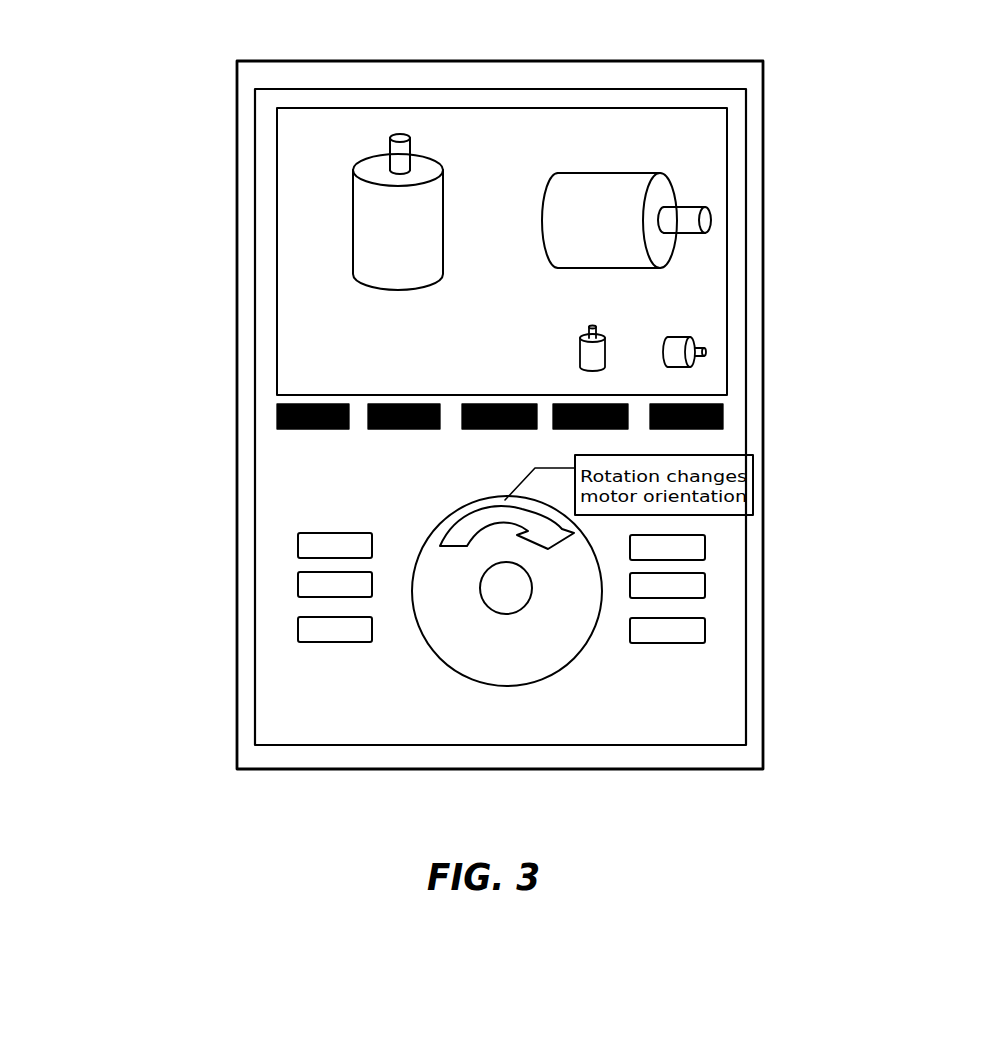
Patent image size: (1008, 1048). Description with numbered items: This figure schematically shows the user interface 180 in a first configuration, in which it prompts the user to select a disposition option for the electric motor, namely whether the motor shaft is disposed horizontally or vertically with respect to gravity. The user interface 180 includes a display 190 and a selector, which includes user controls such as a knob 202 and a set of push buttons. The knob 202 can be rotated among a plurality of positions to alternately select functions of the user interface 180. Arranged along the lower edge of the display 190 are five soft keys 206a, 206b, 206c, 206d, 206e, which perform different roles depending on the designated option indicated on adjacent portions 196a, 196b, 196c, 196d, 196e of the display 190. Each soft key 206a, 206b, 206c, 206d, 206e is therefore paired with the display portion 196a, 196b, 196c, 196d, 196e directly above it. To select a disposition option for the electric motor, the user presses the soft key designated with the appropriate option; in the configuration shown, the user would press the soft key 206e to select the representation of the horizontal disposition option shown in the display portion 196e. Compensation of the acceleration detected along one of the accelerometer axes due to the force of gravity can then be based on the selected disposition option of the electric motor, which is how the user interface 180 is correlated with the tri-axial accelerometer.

The user interface 180 is at (160, 750).
The display 190 is at (507, 128).
The display portion 196a is at (317, 367).
The display portion 196b is at (402, 367).
The display portion 196c is at (498, 373).
The display portion 196d is at (598, 347).
The display portion 196e is at (677, 350).
The soft key 206a is at (303, 430).
The soft key 206b is at (405, 430).
The soft key 206c is at (488, 430).
The soft key 206d is at (592, 430).
The soft key 206e is at (723, 428).
The knob 202 is at (483, 641).